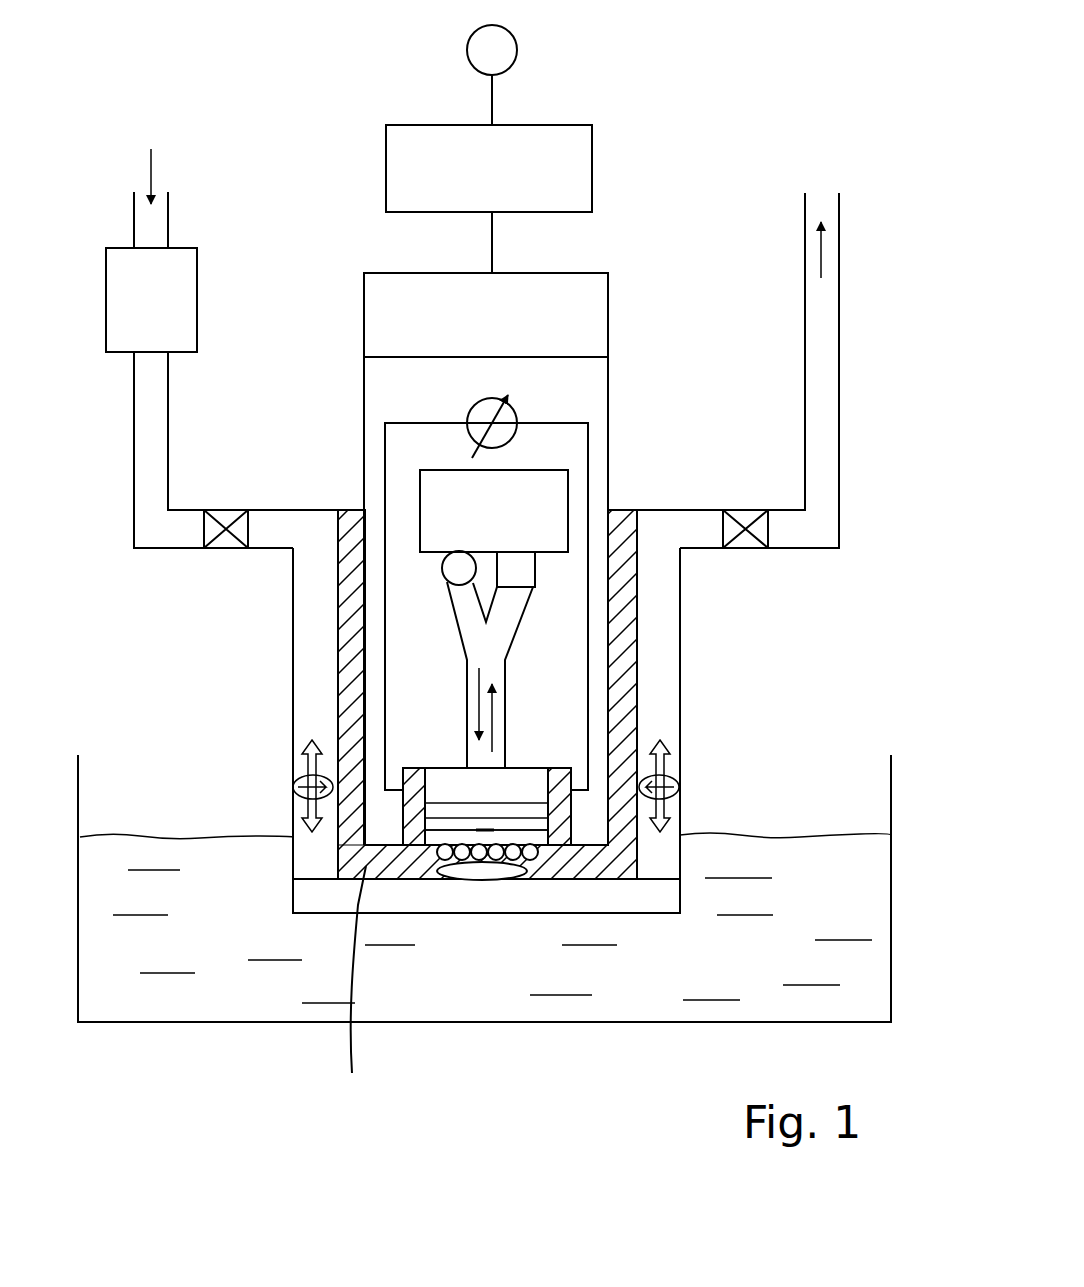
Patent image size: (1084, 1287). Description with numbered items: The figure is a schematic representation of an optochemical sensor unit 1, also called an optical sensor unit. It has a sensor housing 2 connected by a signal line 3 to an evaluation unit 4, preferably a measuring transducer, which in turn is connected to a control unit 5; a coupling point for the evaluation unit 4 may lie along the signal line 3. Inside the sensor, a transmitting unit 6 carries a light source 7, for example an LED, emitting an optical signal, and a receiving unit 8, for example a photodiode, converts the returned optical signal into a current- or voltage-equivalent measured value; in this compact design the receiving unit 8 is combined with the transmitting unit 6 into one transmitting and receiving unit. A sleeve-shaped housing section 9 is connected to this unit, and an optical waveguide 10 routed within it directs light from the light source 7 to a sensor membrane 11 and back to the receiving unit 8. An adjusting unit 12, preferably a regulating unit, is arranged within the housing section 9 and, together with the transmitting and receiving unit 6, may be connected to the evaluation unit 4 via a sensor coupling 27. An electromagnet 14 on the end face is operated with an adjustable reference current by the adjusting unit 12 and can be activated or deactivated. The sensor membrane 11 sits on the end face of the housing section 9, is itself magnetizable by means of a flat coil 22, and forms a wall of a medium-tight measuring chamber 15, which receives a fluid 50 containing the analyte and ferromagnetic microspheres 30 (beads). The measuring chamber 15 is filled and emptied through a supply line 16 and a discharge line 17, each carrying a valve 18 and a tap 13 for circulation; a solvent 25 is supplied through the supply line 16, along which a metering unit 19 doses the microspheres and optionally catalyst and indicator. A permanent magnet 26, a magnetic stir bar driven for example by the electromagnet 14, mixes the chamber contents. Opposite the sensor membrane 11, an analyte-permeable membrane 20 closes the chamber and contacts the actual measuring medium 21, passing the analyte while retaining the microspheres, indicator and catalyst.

The optochemical sensor unit 1 is at (772, 643).
The sensor housing 2 is at (680, 746).
The signal line 3 is at (495, 238).
The evaluation unit 4 is at (489, 168).
The control unit 5 is at (505, 47).
The transmitting unit 6 is at (494, 511).
The light source 7 is at (455, 568).
The receiving unit 8 is at (535, 568).
The housing section 9 is at (598, 670).
The optical waveguide 10 is at (467, 700).
The sensor membrane 11 is at (540, 778).
The adjusting unit 12 is at (515, 418).
The tap 13 is at (298, 788).
The electromagnet 14 is at (563, 832).
The measuring chamber 15 is at (571, 866).
The supply line 16 is at (151, 402).
The discharge line 17 is at (815, 403).
The valve 18 is at (238, 522).
The metering unit 19 is at (151, 300).
The analyte-permeable membrane 20 is at (636, 898).
The measuring medium 21 is at (484, 888).
The flat coil 22 is at (365, 843).
The solvent 25 is at (151, 160).
The permanent magnet 26 is at (516, 882).
The sensor coupling 27 is at (486, 559).
The magnetic microspheres 30 is at (433, 857).
The fluid 50 is at (350, 986).